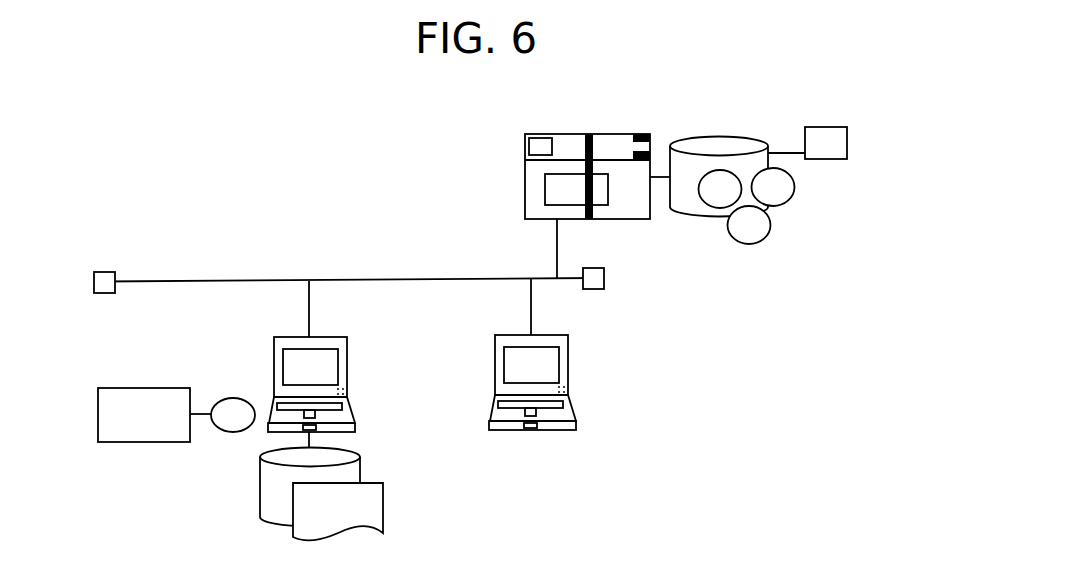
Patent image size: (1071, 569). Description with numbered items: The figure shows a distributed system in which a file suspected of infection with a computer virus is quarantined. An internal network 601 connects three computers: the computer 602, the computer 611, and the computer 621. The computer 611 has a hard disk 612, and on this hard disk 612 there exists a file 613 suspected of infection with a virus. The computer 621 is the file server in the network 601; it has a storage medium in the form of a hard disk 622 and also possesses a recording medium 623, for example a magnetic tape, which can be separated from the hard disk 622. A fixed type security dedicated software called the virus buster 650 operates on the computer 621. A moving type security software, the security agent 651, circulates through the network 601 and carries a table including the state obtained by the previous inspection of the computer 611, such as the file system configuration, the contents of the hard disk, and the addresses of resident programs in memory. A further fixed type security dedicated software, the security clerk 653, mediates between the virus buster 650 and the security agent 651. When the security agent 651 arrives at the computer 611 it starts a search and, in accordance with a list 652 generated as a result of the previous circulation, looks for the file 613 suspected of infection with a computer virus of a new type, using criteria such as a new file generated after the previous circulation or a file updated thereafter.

The internal network 601 is at (378, 279).
The computer 602 is at (568, 353).
The computer 611 is at (333, 336).
The hard disk 612 is at (348, 440).
The file suspected for infection 613 is at (383, 512).
The computer 621 is at (605, 134).
The hard disk 622 is at (718, 133).
The recording medium 623 is at (822, 127).
The virus buster 650 is at (748, 243).
The security agent 651 is at (227, 398).
The list 652 is at (142, 388).
The security clerk 653 is at (576, 190).